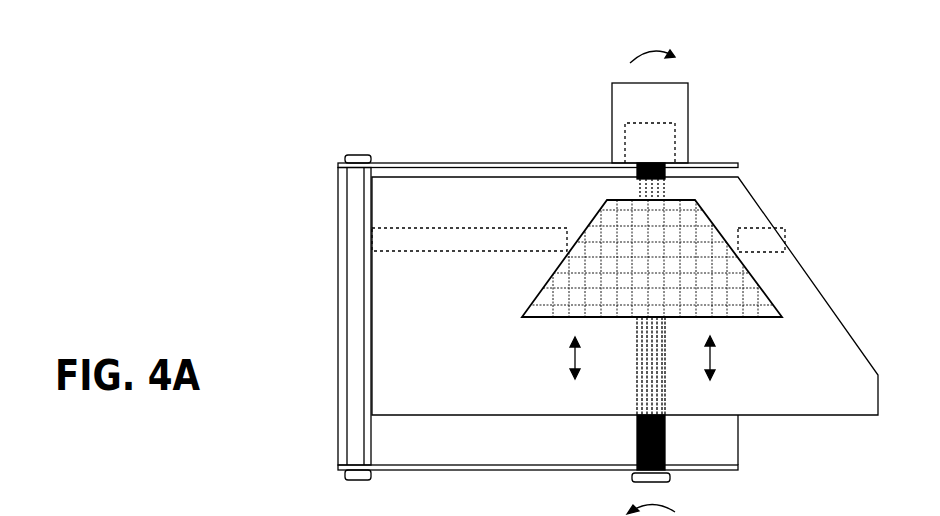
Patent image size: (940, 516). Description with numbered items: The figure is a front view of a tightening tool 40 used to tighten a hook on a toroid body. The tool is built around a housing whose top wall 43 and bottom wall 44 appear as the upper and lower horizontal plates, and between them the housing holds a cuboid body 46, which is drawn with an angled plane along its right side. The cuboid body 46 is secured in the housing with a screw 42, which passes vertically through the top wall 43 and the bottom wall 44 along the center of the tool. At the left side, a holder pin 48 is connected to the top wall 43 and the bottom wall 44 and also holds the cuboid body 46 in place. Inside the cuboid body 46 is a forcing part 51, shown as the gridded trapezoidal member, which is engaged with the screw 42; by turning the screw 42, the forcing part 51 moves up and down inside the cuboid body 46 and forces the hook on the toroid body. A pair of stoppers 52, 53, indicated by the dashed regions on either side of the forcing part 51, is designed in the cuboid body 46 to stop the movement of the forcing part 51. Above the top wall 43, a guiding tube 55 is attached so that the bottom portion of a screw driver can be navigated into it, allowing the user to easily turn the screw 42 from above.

The tightening tool 40 is at (261, 138).
The screw 42 is at (645, 384).
The top wall 43 is at (468, 163).
The bottom wall 44 is at (510, 470).
The cuboid body 46 is at (822, 293).
The holder pin 48 is at (357, 440).
The forcing part 51 is at (546, 310).
The stopper 52 is at (468, 240).
The stopper 53 is at (758, 238).
The guiding tube 55 is at (673, 100).